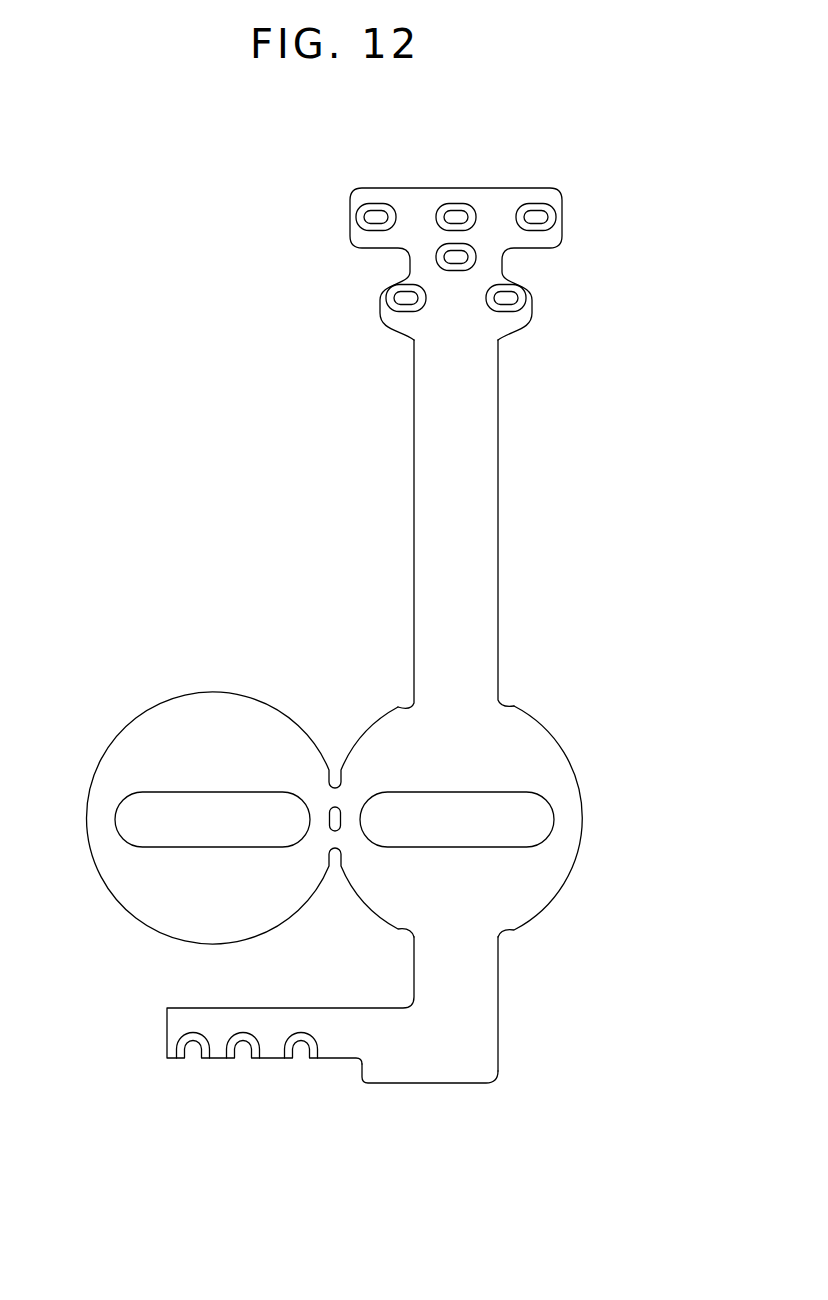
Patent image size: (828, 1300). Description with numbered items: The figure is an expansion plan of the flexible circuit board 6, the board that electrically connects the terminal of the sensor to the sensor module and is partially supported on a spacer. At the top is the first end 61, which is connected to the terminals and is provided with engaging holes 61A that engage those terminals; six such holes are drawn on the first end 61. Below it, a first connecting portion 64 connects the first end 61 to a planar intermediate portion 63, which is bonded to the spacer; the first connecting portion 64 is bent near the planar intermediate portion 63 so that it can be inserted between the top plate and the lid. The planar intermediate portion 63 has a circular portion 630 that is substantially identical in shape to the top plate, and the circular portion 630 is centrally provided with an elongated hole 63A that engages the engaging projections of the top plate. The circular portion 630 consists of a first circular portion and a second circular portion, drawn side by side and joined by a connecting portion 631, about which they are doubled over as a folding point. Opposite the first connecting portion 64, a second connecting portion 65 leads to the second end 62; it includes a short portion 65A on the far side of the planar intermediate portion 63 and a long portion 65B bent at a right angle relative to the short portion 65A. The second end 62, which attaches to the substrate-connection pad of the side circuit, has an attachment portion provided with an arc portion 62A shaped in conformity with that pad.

The flexible circuit board 6 is at (242, 181).
The first end 61 is at (608, 209).
The engaging holes 61A is at (530, 216).
The second end 62 is at (259, 1048).
The arc portion 62A is at (302, 1062).
The planar intermediate portion 63 is at (336, 805).
The circular portion 630 is at (117, 878).
The elongated hole 63A is at (152, 797).
The connecting portion 631 is at (338, 800).
The first connecting portion 64 is at (488, 497).
The second connecting portion 65 is at (504, 1020).
The short portion 65A is at (490, 1037).
The long portion 65B is at (422, 1070).